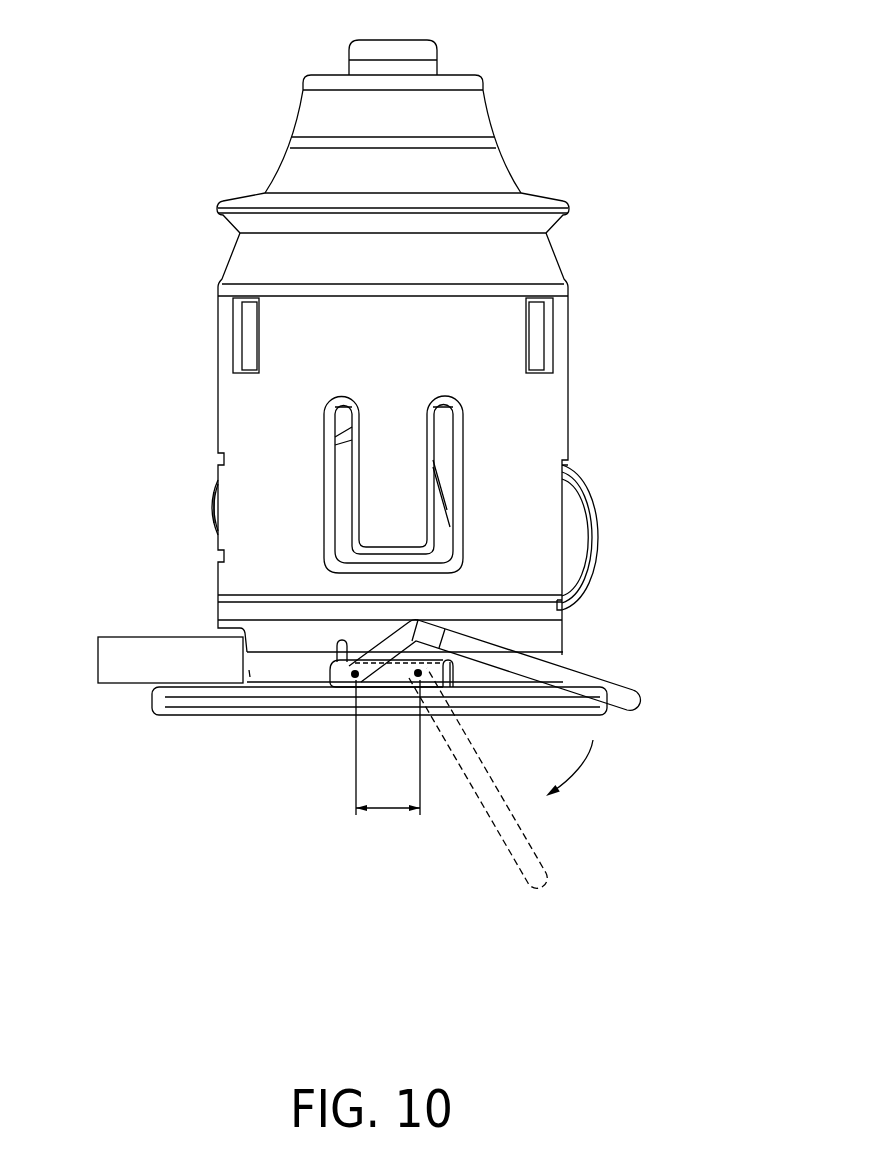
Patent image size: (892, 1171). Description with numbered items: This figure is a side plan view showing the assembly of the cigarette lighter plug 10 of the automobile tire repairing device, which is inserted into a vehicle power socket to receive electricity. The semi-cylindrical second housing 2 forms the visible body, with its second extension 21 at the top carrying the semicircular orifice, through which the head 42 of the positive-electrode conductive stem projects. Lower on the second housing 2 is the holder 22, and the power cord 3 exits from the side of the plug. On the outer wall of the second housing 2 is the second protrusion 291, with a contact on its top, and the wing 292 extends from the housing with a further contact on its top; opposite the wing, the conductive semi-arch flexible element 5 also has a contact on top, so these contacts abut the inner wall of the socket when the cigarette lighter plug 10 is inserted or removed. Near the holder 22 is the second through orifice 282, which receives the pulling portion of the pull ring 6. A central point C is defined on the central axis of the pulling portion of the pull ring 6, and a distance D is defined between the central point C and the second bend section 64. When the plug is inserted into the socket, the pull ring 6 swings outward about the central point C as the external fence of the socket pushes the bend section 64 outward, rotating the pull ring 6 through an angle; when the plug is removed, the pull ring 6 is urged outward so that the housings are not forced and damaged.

The cigarette lighter plug 10 is at (165, 105).
The head 42 is at (373, 62).
The second extension 21 is at (465, 168).
The second housing 2 is at (537, 427).
The second protrusion 291 is at (385, 480).
The wing 292 is at (207, 512).
The power cord 3 is at (160, 648).
The semi-arch flexible element 5 is at (590, 557).
The second bend section 64 is at (507, 629).
The holder 22 is at (182, 708).
The second through orifice 282 is at (348, 680).
The central point C is at (354, 682).
The distance D is at (390, 808).
The pull ring 6 is at (533, 858).